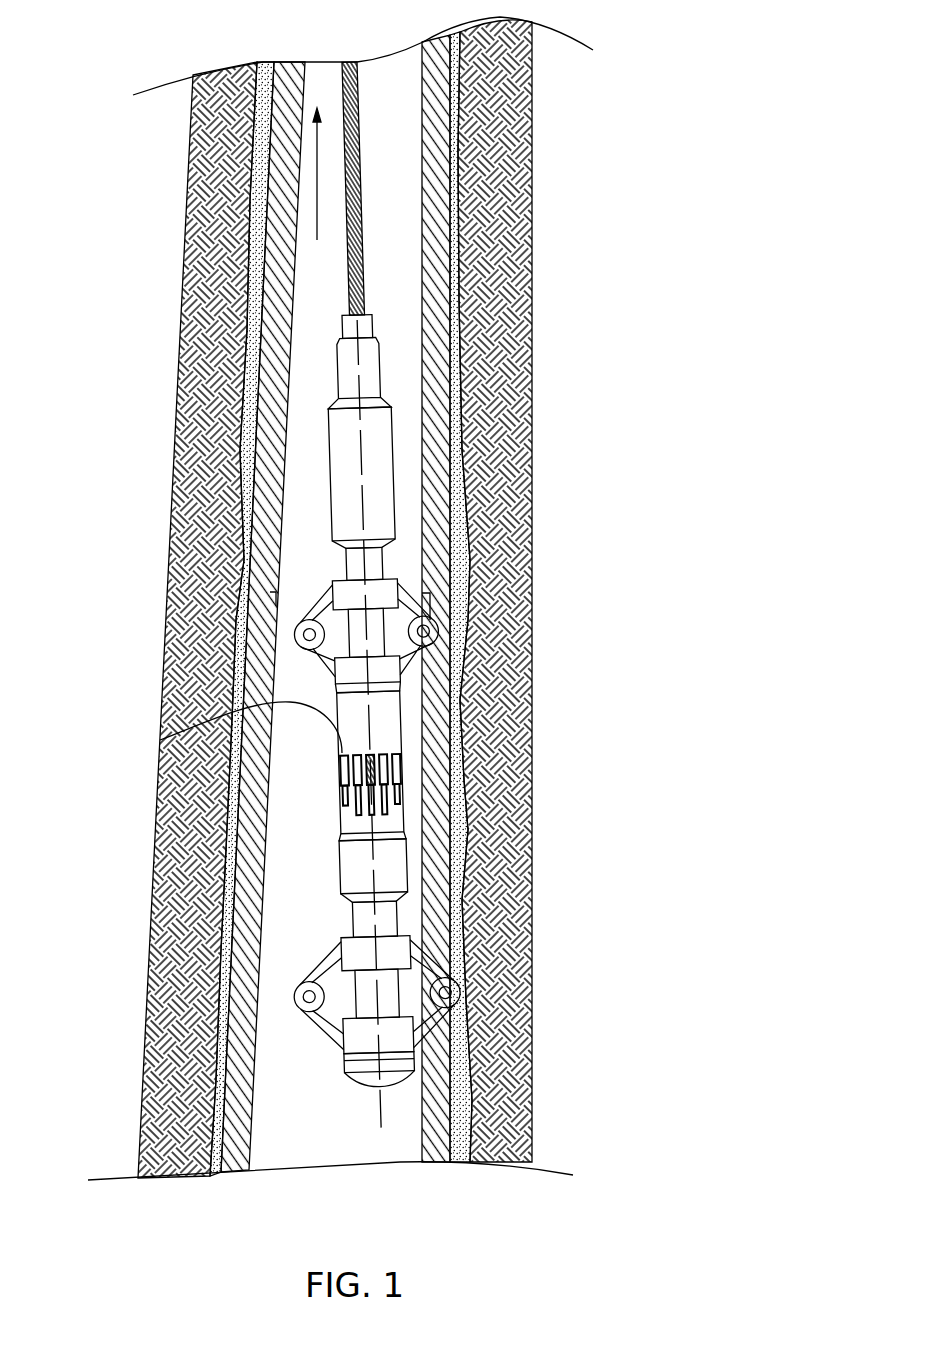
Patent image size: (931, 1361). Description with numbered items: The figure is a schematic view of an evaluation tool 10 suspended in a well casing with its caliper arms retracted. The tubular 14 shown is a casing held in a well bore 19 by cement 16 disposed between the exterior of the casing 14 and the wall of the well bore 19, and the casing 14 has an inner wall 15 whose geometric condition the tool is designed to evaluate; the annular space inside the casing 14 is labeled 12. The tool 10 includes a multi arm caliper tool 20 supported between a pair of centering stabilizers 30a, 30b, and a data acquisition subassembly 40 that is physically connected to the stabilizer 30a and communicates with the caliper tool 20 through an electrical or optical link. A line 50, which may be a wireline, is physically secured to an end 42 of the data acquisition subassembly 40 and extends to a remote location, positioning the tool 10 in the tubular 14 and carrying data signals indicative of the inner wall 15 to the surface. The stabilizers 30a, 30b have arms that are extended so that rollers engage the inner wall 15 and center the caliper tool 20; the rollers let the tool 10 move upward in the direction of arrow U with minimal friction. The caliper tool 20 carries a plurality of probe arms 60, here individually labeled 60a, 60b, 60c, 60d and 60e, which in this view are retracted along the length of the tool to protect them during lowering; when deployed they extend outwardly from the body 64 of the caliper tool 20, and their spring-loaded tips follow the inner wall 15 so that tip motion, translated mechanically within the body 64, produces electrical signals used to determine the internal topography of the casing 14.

The evaluation tool 10 is at (322, 355).
The wellbore 12 is at (412, 772).
The tubular 14 is at (452, 978).
The inner wall 15 is at (248, 1145).
The cement 16 is at (462, 1018).
The well bore 19 is at (435, 1162).
The multi arm caliper tool 20 is at (380, 718).
The centering stabilizer 30a is at (343, 614).
The centering stabilizer 30b is at (343, 1011).
The data acquisition subassembly 40 is at (402, 480).
The end of the data acquisition subassembly 42 is at (382, 325).
The line 50 is at (373, 218).
The probe arms 60 is at (350, 788).
The electrode 60a is at (396, 779).
The electrode 60b is at (384, 784).
The electrode 60c is at (371, 785).
The electrode 60d is at (358, 785).
The electrode 60e is at (344, 780).
The body 64 is at (303, 768).
The direction arrow U is at (317, 200).